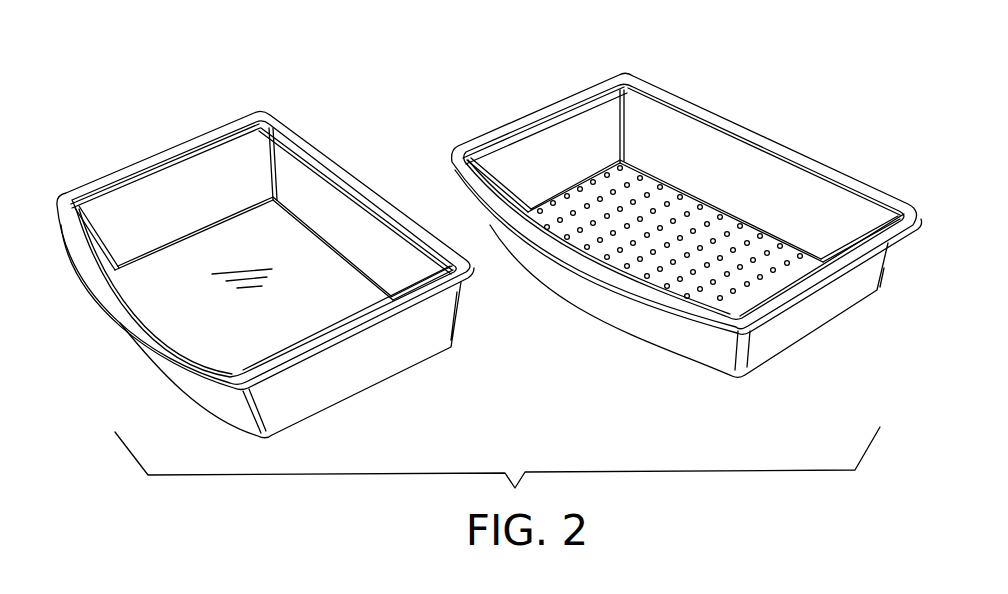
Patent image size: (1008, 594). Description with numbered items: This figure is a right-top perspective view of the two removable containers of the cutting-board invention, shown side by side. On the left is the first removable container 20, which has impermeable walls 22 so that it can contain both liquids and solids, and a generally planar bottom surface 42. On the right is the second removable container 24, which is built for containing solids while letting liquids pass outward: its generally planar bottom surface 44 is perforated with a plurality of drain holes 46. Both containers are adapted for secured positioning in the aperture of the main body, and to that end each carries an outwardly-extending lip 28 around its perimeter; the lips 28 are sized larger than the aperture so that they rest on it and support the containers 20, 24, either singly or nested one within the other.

The first removable container 20 is at (266, 260).
The impermeable walls 22 is at (357, 377).
The second removable container 24 is at (680, 224).
The outwardly-extending lips 28 is at (60, 215).
The bottom surface 42 is at (287, 247).
The bottom surface 44 is at (640, 257).
The drain holes 46 is at (560, 207).